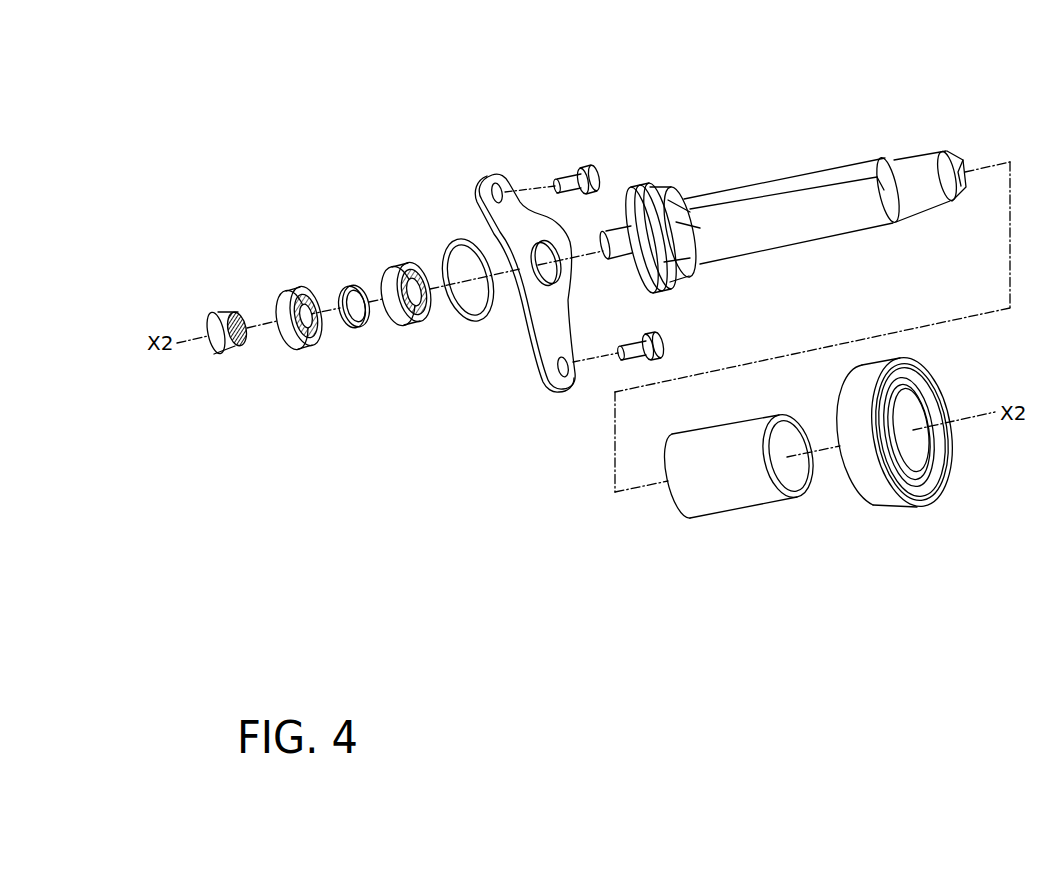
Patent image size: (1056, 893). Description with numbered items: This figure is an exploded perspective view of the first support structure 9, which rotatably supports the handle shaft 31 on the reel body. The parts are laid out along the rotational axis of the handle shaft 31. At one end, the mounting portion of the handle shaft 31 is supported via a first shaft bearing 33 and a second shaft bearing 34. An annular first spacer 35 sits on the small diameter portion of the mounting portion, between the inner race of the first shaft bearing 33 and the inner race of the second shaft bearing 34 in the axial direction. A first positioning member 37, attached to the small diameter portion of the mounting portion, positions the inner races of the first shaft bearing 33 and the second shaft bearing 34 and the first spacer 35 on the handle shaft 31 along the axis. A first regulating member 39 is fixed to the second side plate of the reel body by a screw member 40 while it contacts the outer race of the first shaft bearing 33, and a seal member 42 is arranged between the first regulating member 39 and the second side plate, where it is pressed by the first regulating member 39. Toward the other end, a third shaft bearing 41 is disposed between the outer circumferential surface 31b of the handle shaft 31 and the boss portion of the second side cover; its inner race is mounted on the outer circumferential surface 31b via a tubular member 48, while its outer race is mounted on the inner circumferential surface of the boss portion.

The first support structure 9 is at (668, 98).
The handle shaft 31 is at (765, 157).
The outer circumferential surface 31b is at (792, 233).
The first shaft bearing 33 is at (397, 257).
The second shaft bearing 34 is at (290, 280).
The first spacer 35 is at (350, 270).
The first positioning member 37 is at (230, 303).
The first regulating member 39 is at (495, 158).
The screw member 40 is at (565, 170).
The third shaft bearing 41 is at (863, 503).
The seal member 42 is at (460, 232).
The tubular member 48 is at (728, 503).